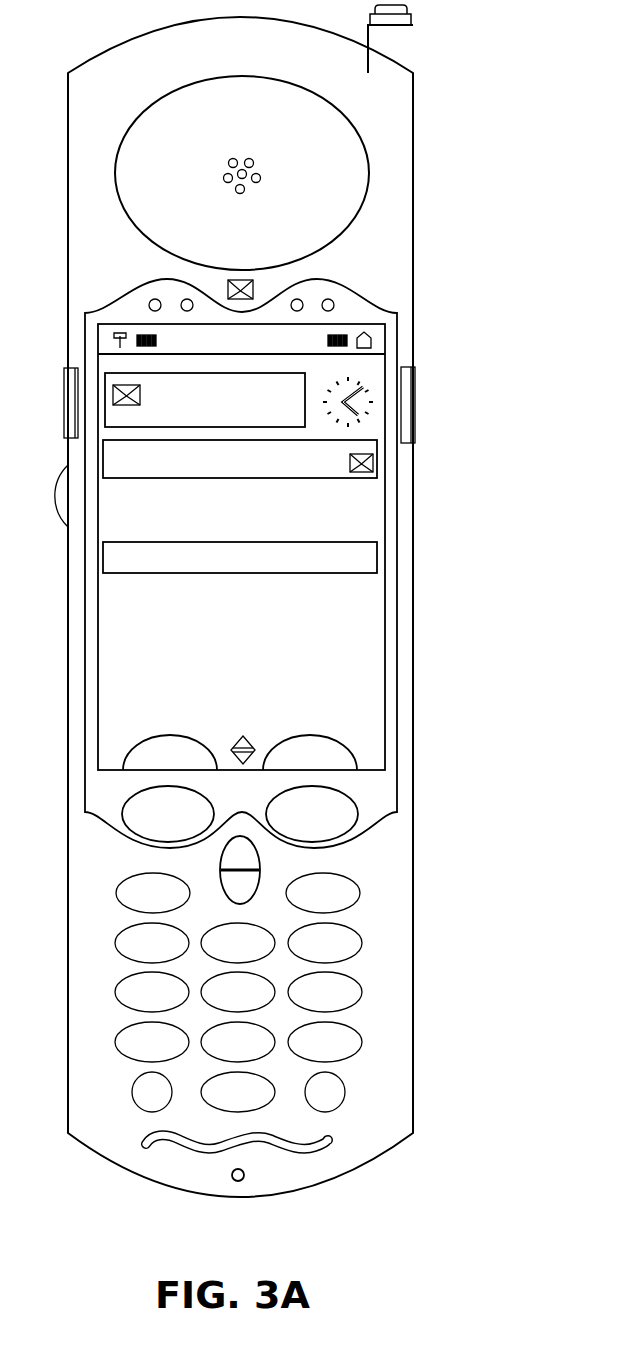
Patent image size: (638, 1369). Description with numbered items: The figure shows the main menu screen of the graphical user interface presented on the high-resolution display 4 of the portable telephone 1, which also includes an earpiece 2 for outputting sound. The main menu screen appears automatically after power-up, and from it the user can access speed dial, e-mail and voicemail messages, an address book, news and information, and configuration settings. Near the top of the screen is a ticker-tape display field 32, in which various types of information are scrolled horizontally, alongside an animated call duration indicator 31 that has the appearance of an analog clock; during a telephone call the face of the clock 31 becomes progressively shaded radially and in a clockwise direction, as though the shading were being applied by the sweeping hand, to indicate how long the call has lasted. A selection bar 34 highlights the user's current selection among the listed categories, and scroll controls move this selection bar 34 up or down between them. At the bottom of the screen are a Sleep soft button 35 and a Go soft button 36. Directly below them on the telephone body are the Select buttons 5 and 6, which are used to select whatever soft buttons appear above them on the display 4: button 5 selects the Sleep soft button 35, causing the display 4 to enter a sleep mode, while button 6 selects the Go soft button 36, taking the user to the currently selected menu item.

The telephone 1 is at (466, 38).
The earpiece 2 is at (418, 415).
The display 4 is at (367, 666).
The Select button 5 is at (156, 830).
The Select button 6 is at (324, 830).
The animated call duration indicator 31 is at (338, 413).
The ticker-tape display field 32 is at (211, 418).
The selection bar 34 is at (298, 567).
The Sleep soft button 35 is at (172, 735).
The Go soft button 36 is at (312, 735).